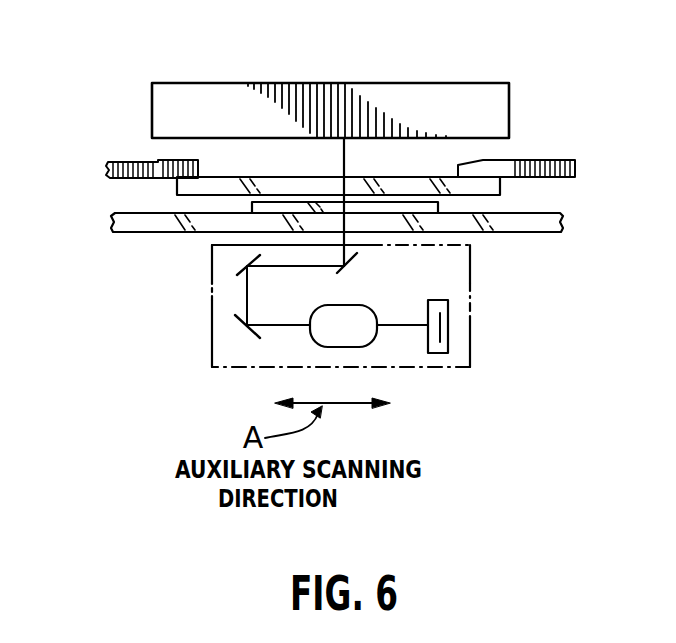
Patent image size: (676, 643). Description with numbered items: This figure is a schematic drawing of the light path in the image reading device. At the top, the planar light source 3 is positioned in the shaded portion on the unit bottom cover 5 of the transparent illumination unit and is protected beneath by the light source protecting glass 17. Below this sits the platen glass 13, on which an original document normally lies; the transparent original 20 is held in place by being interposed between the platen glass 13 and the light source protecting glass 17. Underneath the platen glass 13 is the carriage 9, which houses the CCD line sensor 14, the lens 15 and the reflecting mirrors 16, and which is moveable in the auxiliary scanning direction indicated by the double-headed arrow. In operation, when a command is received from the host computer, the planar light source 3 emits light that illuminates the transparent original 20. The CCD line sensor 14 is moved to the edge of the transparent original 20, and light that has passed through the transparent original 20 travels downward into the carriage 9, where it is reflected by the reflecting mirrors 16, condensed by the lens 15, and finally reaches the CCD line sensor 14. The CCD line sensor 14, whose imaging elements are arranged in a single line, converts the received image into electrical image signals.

The planar light source 3 is at (209, 88).
The unit bottom cover 5 is at (535, 162).
The carriage 9 is at (471, 343).
The platen glass 13 is at (545, 228).
The CCD line sensor 14 is at (448, 302).
The lens 15 is at (357, 340).
The reflecting mirrors 16 is at (337, 273).
The light source protecting glass 17 is at (500, 187).
The transparent original 20 is at (252, 206).